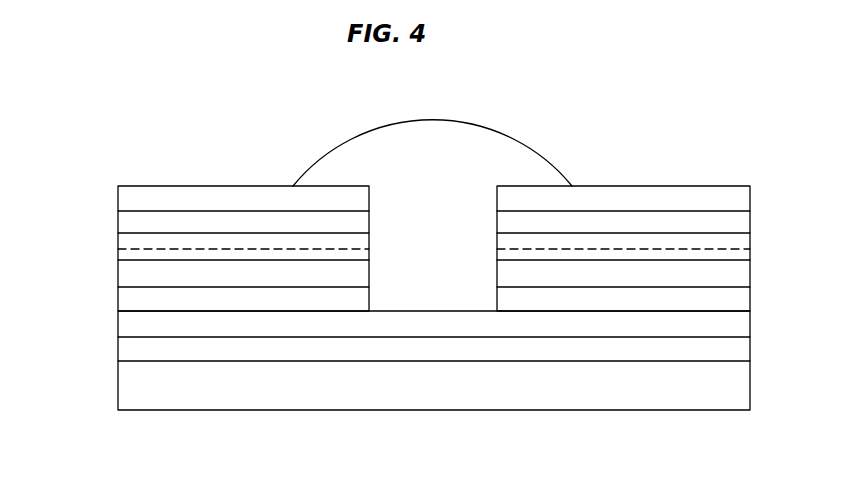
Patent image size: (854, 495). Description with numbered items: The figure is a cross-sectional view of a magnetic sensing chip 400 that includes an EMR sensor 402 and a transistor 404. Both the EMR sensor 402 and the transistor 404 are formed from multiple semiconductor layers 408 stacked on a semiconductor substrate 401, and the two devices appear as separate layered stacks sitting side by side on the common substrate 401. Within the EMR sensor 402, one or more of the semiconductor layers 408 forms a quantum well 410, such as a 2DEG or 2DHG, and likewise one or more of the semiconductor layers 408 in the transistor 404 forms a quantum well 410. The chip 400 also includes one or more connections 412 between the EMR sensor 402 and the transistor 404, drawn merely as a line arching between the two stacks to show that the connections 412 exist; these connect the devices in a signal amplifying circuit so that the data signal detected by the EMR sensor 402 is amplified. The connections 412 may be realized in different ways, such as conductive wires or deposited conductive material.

The magnetic sensing chip 400 is at (133, 78).
The semiconductor substrate 401 is at (472, 394).
The EMR sensor 402 is at (643, 153).
The transistor 404 is at (240, 151).
The semiconductor layers 408 is at (62, 185).
The quantum well 410 is at (112, 235).
The connections 412 is at (385, 123).